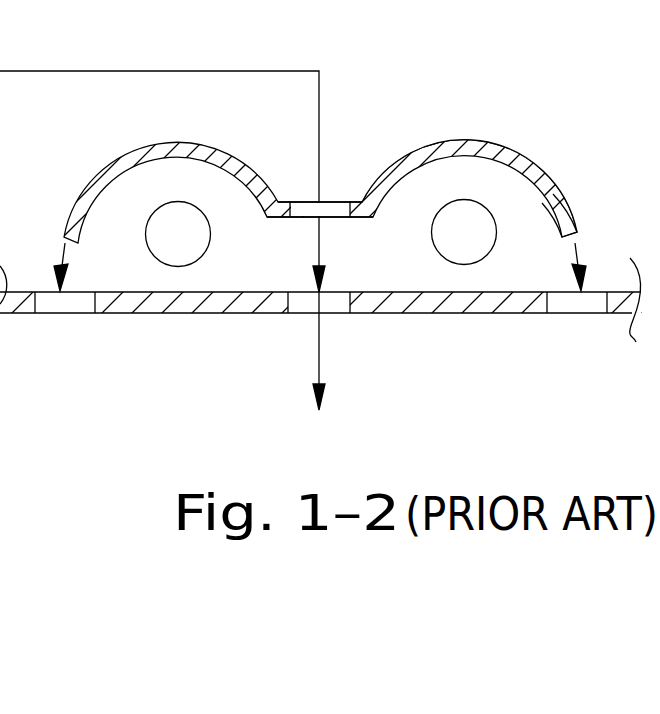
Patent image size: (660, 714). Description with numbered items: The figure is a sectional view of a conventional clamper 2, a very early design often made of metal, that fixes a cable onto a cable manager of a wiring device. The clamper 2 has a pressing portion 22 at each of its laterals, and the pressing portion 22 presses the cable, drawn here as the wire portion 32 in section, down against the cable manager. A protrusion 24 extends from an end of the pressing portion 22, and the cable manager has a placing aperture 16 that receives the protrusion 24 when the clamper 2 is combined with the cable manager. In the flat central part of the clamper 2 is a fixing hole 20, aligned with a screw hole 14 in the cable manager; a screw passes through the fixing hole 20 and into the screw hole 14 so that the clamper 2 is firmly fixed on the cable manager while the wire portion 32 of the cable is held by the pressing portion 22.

The clamper 2 is at (326, 167).
The fixing hole 20 is at (332, 207).
The pressing portion 22 is at (487, 152).
The protrusion 24 is at (571, 224).
The wire portion 32 is at (193, 232).
The screw hole 14 is at (332, 302).
The placing aperture 16 is at (580, 300).